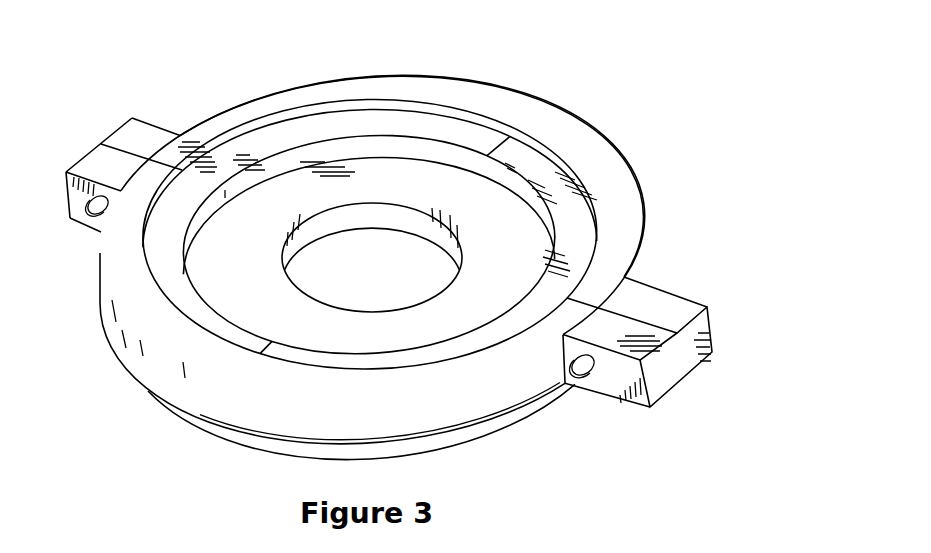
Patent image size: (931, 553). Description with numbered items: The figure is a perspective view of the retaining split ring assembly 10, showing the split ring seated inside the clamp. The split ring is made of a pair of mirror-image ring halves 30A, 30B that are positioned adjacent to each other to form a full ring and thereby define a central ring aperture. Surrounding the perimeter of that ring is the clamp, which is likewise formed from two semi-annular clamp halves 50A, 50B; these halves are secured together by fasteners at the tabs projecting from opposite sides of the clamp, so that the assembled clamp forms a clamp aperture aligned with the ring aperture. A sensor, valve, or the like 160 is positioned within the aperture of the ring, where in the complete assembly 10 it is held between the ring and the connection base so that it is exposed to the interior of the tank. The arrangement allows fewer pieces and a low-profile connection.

The retaining split ring assembly 10 is at (443, 264).
The ring half 30A is at (432, 128).
The ring half 30B is at (537, 167).
The clamp half 50A is at (325, 378).
The clamp half 50B is at (595, 164).
The sensor or valve 160 is at (527, 245).